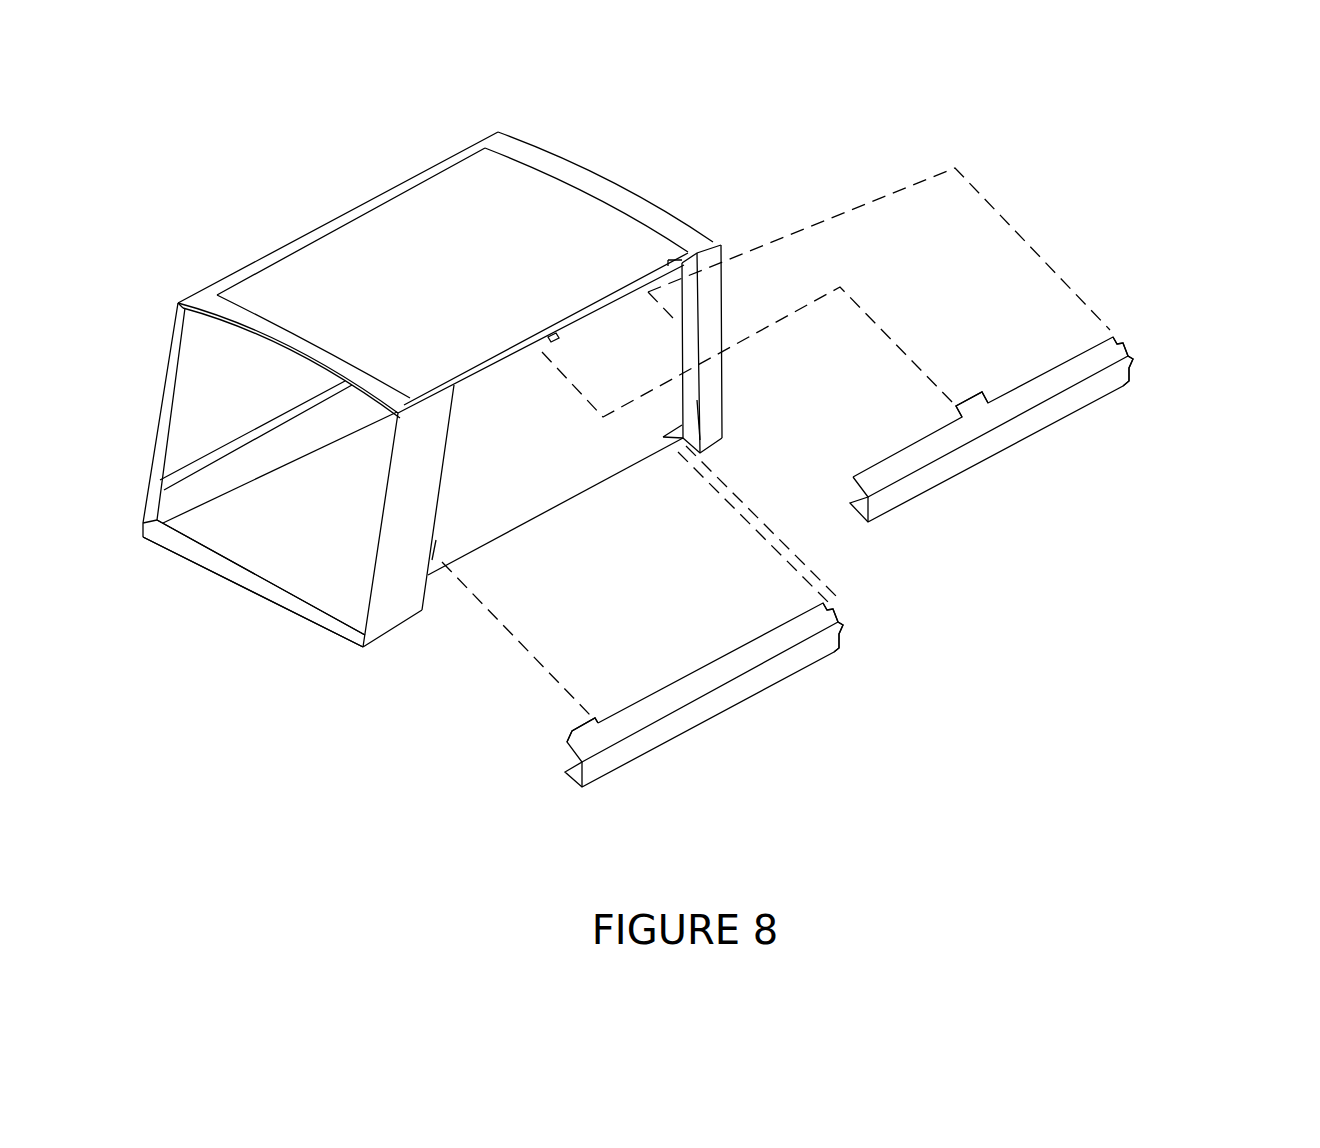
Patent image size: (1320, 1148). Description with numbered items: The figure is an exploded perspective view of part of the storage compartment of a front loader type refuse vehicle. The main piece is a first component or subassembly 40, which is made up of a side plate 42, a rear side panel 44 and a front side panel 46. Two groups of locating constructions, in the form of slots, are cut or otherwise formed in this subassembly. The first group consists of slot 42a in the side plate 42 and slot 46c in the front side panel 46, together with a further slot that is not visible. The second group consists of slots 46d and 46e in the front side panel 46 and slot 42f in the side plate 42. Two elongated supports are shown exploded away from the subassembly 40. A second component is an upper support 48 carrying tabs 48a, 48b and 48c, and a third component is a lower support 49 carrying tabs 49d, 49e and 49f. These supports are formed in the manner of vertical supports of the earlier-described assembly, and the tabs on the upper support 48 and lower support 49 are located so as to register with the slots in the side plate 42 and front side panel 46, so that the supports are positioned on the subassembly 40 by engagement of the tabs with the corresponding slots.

The first component or subassembly 40 is at (615, 166).
The side plate 42 is at (483, 423).
The slot 42a is at (556, 339).
The slot 42f is at (433, 551).
The rear side panel 44 is at (386, 638).
The front side panel 46 is at (724, 251).
The slot 46c is at (676, 265).
The slot 46d is at (702, 420).
The slot 46e is at (720, 444).
The upper support 48 is at (1013, 453).
The tab 48a is at (973, 392).
The tab 48b is at (1120, 336).
The tab 48c is at (1136, 357).
The lower support 49 is at (721, 713).
The tab 49d is at (839, 602).
The tab 49e is at (846, 633).
The tab 49f is at (566, 719).